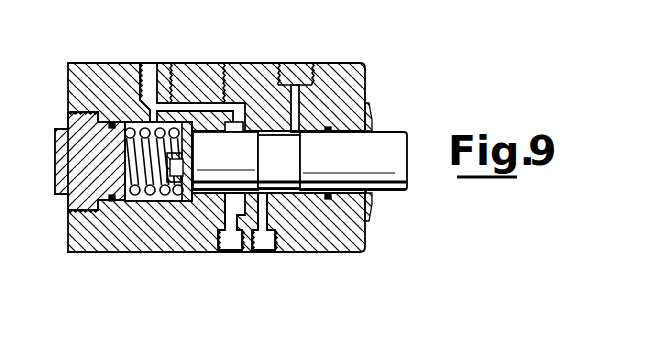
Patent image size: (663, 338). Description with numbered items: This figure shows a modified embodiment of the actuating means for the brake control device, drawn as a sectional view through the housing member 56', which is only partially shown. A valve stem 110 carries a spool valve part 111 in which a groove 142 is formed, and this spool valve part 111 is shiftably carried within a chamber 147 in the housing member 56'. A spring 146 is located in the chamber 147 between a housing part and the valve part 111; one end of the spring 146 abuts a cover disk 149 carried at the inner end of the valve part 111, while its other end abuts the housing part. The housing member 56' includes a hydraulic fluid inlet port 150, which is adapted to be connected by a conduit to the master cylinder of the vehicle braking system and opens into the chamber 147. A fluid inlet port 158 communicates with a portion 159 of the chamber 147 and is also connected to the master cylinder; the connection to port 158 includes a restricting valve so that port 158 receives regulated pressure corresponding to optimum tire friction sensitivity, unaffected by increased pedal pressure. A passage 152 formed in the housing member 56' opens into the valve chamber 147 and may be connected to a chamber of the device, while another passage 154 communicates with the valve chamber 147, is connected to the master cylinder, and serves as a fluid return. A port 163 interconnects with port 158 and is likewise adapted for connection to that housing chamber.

The housing member 56' is at (240, 144).
The valve stem 110 is at (303, 191).
The spool valve part 111 is at (200, 222).
The groove 142 is at (292, 157).
The spring 146 is at (135, 208).
The chamber 147 is at (287, 195).
The cover disk 149 is at (172, 202).
The hydraulic fluid inlet port 150 is at (296, 92).
The passage 152 is at (262, 233).
The passage 154 is at (229, 233).
The fluid inlet port 158 is at (155, 113).
The portion of chamber 159 is at (126, 122).
The port 163 is at (233, 103).